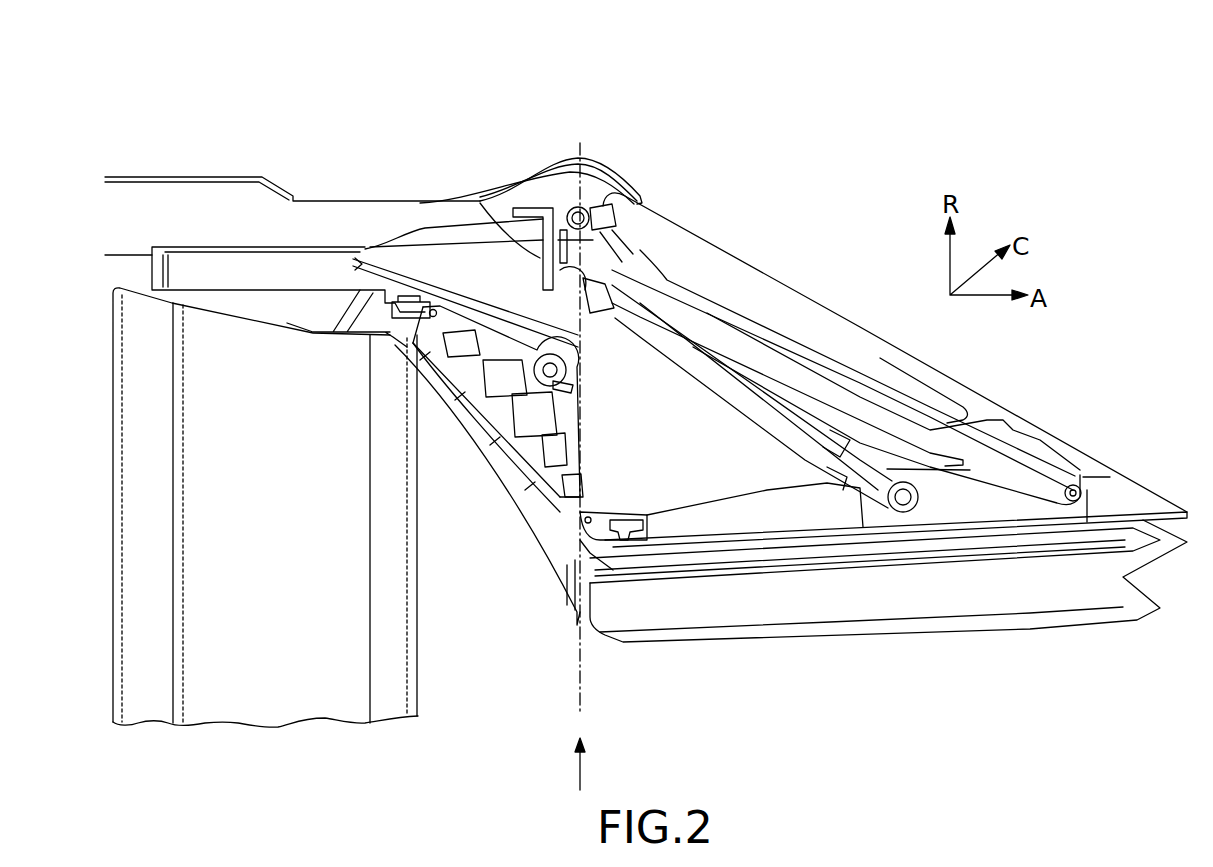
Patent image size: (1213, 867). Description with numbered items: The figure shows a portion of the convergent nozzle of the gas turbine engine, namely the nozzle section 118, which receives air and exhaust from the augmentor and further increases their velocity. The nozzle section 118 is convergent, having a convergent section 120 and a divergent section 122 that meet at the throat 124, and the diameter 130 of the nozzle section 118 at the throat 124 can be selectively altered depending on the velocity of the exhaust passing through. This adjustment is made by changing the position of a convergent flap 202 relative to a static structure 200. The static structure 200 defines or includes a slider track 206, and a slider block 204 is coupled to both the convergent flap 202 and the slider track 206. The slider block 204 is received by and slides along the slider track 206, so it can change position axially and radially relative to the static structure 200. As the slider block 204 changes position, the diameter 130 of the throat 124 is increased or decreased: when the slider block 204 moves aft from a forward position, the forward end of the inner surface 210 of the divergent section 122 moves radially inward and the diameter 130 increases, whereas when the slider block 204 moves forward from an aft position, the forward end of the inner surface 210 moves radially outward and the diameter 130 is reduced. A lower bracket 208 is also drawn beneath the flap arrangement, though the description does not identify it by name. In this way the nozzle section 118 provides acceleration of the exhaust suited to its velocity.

The nozzle section 118 is at (796, 118).
The convergent section 120 is at (517, 119).
The divergent section 122 is at (640, 119).
The throat 124 is at (580, 153).
The diameter 130 is at (590, 768).
The static structure 200 is at (180, 247).
The convergent flap 202 is at (497, 348).
The slider block 204 is at (577, 368).
The slider track 206 is at (367, 250).
The lower bracket 208 is at (517, 547).
The inner surface 210 is at (1022, 630).